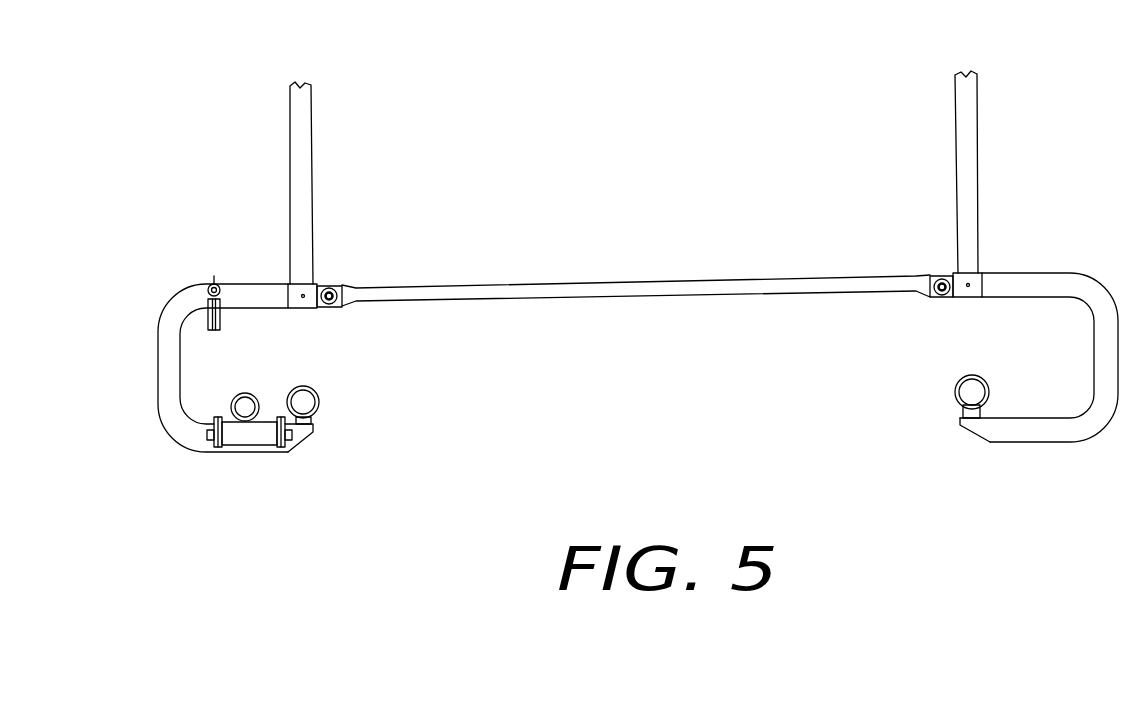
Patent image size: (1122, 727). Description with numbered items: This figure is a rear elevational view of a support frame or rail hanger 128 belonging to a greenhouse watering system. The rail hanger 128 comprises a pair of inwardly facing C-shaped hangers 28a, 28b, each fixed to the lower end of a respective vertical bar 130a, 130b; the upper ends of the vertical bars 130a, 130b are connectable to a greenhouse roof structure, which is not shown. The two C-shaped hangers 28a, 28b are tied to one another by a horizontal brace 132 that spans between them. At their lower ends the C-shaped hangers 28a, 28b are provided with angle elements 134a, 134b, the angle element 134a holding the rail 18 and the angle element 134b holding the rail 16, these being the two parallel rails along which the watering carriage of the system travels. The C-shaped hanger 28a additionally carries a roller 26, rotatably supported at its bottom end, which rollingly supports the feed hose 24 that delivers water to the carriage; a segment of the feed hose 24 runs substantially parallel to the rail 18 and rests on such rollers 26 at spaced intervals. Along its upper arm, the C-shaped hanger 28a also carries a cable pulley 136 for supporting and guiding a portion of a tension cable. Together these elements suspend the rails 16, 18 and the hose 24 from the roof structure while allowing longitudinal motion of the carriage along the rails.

The support frame or rail hanger 128 is at (267, 127).
The vertical bar 130a is at (307, 165).
The vertical bar 130b is at (970, 212).
The horizontal brace 132 is at (678, 285).
The C-shaped hanger 28a is at (170, 423).
The C-shaped hanger 28b is at (1017, 283).
The cable pulley 136 is at (208, 328).
The feed hose 24 is at (250, 400).
The rail 18 is at (313, 392).
The roller 26 is at (247, 433).
The angle element 134a is at (313, 423).
The angle element 134b is at (962, 415).
The rail 16 is at (968, 377).